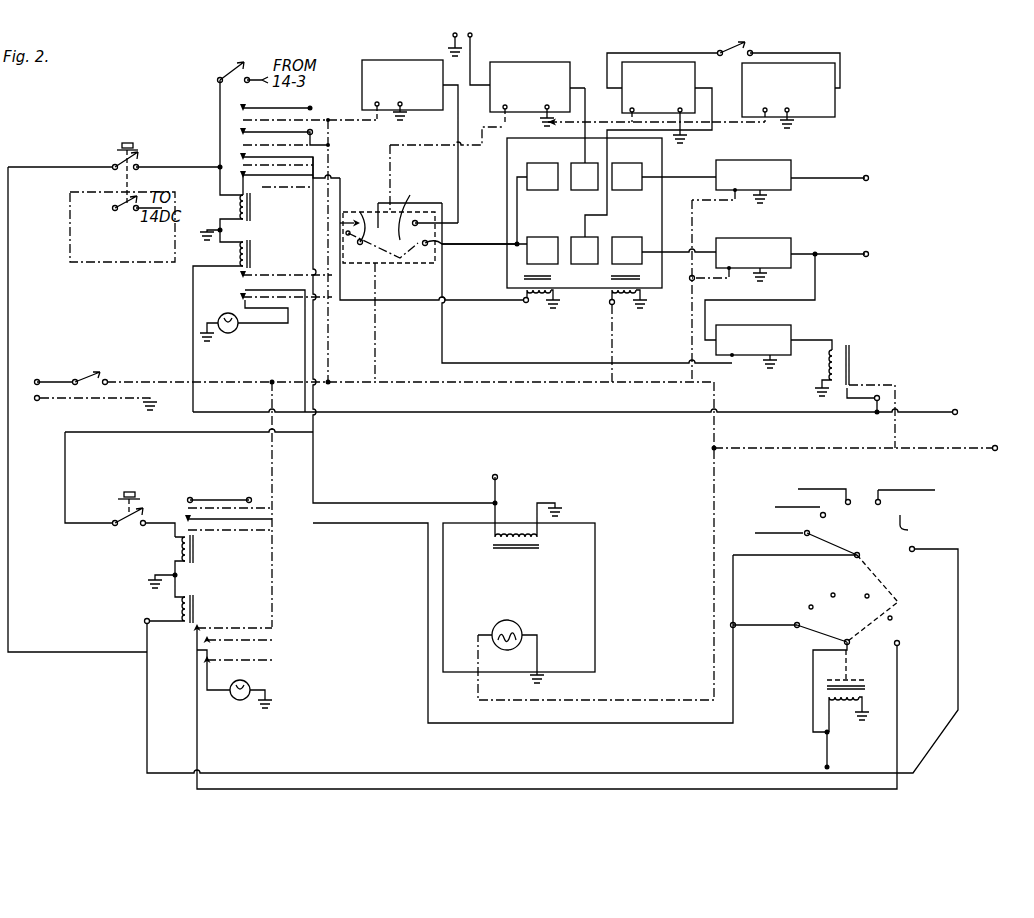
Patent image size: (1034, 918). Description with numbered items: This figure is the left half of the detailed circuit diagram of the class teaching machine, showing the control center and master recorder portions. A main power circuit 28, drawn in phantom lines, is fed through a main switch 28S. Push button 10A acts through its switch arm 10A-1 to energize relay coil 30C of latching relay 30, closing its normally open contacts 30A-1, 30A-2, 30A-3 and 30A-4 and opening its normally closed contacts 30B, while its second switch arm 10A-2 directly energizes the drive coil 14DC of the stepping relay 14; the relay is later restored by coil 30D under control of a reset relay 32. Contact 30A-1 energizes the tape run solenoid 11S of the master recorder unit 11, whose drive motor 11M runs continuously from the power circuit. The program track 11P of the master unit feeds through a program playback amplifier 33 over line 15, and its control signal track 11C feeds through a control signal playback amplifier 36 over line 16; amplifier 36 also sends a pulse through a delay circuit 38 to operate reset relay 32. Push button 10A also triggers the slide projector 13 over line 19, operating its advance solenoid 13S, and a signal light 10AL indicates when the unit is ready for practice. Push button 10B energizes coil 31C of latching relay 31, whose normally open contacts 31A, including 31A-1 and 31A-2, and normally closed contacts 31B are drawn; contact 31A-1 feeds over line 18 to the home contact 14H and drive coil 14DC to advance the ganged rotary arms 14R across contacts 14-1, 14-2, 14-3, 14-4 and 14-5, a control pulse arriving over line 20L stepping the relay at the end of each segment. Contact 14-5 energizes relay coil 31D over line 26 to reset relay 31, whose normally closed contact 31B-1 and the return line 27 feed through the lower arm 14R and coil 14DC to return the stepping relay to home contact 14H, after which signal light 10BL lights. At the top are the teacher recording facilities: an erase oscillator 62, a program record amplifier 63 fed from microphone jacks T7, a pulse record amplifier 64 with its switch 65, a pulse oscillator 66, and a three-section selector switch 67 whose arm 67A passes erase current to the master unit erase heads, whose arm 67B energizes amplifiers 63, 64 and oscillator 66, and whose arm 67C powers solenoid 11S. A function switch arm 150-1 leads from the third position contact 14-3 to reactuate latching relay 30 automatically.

The first switch arm 150-1 is at (221, 76).
The push button 10A is at (133, 143).
The switch arm 10A-1 is at (113, 165).
The switch arm 10A-2 is at (113, 211).
The relay contact 30A-4 is at (272, 110).
The normally open contact 30A-3 is at (260, 138).
The normally open contact 30A-2 is at (260, 163).
The normally open contact 30A-1 is at (264, 178).
The relay coil 30C is at (241, 207).
The latching relay 30 is at (223, 230).
The relay coil 30D is at (240, 254).
The normally closed contacts 30B is at (242, 290).
The signal light 10AL is at (232, 333).
The main switch 28S is at (80, 378).
The main power circuit 28 is at (150, 383).
The erase oscillator 62 is at (380, 58).
The jacks T7 is at (469, 48).
The program record amplifier 63 is at (528, 60).
The pulse record amplifier 64 is at (645, 60).
The switch 65 is at (742, 45).
The pulse oscillator 66 is at (785, 62).
The three-section selector switch 67 is at (407, 257).
The switch arm 67A is at (432, 246).
The switch arm 67B is at (428, 207).
The switch arm 67C is at (360, 212).
The master recorder unit 11 is at (507, 205).
The program track 11P is at (655, 177).
The control signal track 11C is at (663, 251).
The tape run solenoid 11S is at (528, 304).
The drive motor 11M is at (626, 305).
The program playback amplifier 33 is at (758, 161).
The line 15 is at (815, 175).
The control signal playback amplifier 36 is at (772, 245).
The line 16 is at (848, 254).
The delay circuit 38 is at (776, 328).
The reset relay 32 is at (852, 362).
The line 19 is at (318, 470).
The push button 10B is at (148, 477).
The normally open contacts 31A is at (204, 497).
The relay contact 31A-2 is at (217, 495).
The normally open contact 31A-1 is at (213, 523).
The relay coil 31C is at (180, 547).
The latching relay 31 is at (176, 579).
The relay coil 31D is at (180, 608).
The normally closed contacts 31B is at (213, 629).
The normally closed contact 31B-1 is at (197, 645).
The signal light 10BL is at (252, 686).
The circuit 26 is at (147, 712).
The return line 27 is at (200, 735).
The line 18 is at (428, 700).
The slide projector 13 is at (596, 623).
The advance solenoid 13S is at (513, 548).
The stepping relay 14 is at (934, 595).
The home contact 14H is at (805, 537).
The rotary arms 14R is at (822, 544).
The drive coil 14DC is at (838, 701).
The line 20L is at (829, 755).
The first position contact 14-1 is at (820, 515).
The second position contact 14-2 is at (823, 497).
The third position contact 14-3 is at (882, 502).
The contact 14-4 is at (922, 526).
The contact 14-5 is at (910, 552).